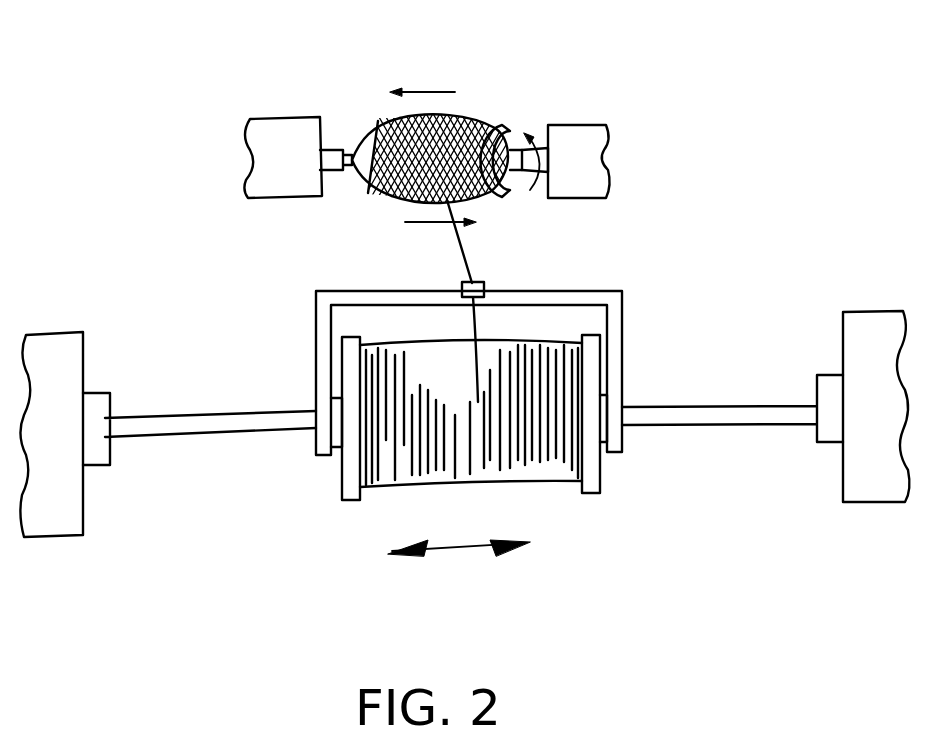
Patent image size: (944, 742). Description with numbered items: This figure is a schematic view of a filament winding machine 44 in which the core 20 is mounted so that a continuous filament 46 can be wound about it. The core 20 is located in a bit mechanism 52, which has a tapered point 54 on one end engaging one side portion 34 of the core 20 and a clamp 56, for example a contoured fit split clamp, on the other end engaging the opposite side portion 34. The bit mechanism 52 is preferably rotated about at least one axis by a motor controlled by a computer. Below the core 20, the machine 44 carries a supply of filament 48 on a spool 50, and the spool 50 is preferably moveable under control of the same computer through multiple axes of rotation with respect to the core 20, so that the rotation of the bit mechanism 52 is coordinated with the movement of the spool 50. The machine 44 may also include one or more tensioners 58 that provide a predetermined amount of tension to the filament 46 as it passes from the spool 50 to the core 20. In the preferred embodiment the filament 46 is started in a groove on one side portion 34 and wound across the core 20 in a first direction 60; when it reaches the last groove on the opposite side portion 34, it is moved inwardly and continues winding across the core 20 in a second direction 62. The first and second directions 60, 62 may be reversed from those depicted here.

The core 20 is at (516, 196).
The side portion 34 is at (350, 190).
The filament winding machine 44 is at (580, 62).
The filament 46 is at (450, 256).
The supply of filament 48 is at (528, 472).
The spool 50 is at (612, 481).
The bit mechanism 52 is at (302, 154).
The tapered point 54 is at (353, 146).
The clamp 56 is at (527, 138).
The tensioner 58 is at (620, 298).
The first direction 60 is at (438, 96).
The second direction 62 is at (420, 220).